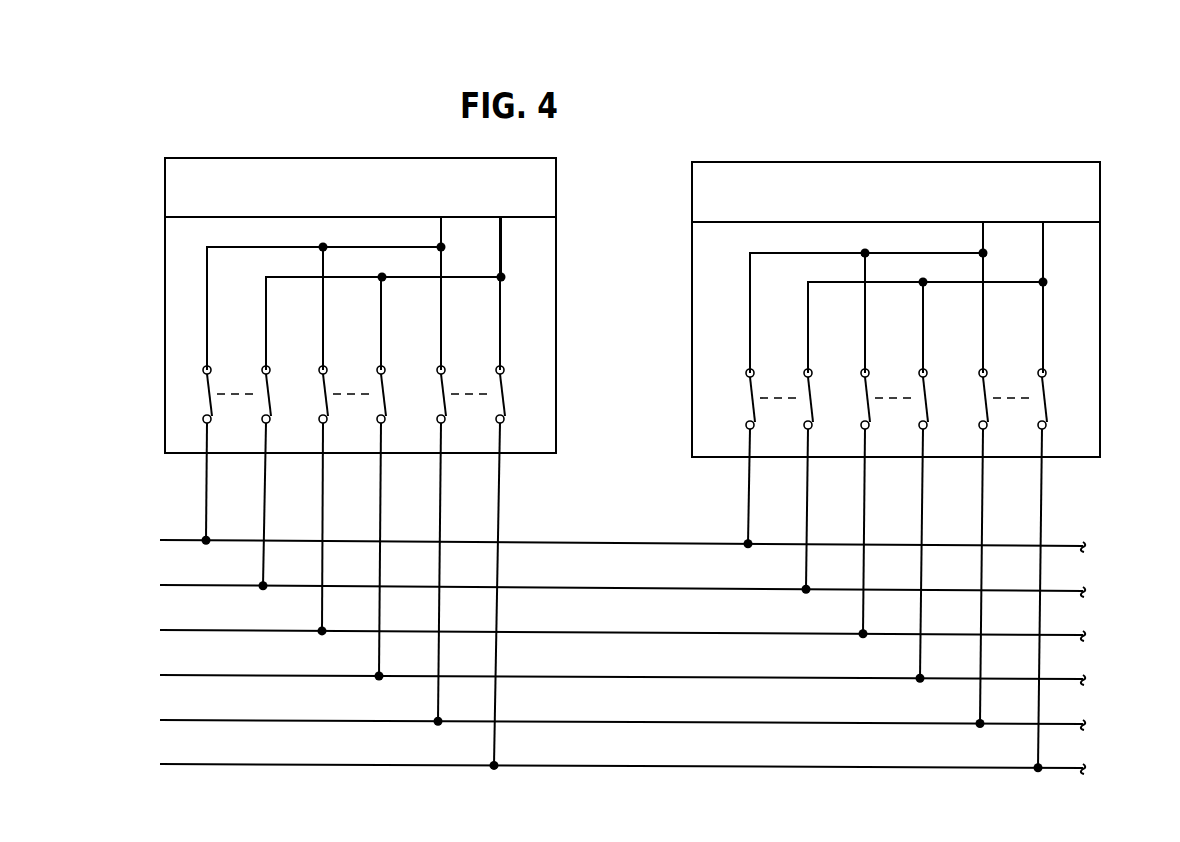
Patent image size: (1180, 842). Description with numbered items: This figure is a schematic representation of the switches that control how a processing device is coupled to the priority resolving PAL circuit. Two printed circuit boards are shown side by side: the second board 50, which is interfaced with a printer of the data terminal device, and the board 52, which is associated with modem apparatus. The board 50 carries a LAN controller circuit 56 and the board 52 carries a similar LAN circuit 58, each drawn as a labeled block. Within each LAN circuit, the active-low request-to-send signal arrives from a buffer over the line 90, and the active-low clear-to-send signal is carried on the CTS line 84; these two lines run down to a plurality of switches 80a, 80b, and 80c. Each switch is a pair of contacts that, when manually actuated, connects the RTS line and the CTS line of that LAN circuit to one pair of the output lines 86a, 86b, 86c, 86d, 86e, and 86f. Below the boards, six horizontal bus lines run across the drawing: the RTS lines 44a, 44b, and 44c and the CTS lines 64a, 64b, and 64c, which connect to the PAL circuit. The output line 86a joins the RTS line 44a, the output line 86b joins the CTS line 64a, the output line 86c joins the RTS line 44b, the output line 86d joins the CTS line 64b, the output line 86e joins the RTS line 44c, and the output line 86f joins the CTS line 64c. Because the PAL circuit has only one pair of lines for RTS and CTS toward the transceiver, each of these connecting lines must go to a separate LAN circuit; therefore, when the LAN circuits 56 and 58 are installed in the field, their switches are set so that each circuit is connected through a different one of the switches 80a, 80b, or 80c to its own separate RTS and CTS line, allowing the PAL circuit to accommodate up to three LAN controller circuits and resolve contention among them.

The second board 50 is at (357, 158).
The board 52 is at (930, 162).
The LAN controller circuit 56 is at (172, 193).
The LAN circuit 58 is at (705, 200).
The line 90 is at (441, 230).
The CTS line 84 is at (501, 262).
The switch 80a is at (268, 384).
The switch 80b is at (385, 384).
The switch 80c is at (507, 407).
The output line 86a is at (207, 492).
The output line 86b is at (263, 565).
The output line 86c is at (322, 612).
The output line 86d is at (379, 651).
The output line 86e is at (438, 696).
The output line 86f is at (494, 742).
The RTS line 44a is at (607, 545).
The CTS line 64a is at (615, 590).
The RTS line 44b is at (625, 634).
The CTS line 64b is at (635, 678).
The RTS line 44c is at (643, 723).
The CTS line 64c is at (652, 767).